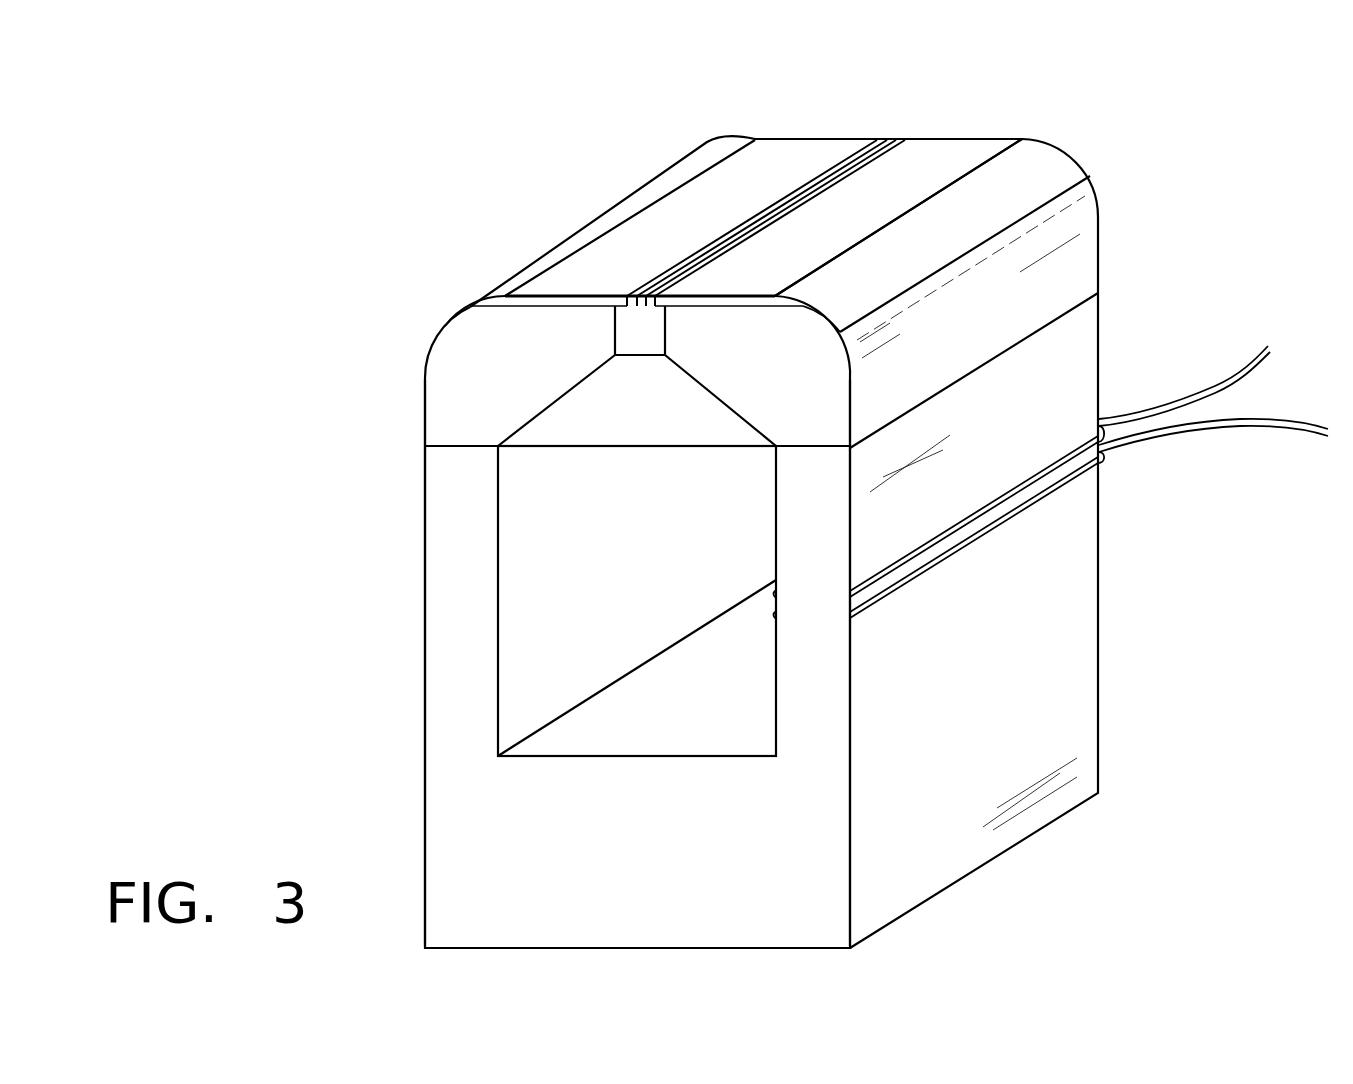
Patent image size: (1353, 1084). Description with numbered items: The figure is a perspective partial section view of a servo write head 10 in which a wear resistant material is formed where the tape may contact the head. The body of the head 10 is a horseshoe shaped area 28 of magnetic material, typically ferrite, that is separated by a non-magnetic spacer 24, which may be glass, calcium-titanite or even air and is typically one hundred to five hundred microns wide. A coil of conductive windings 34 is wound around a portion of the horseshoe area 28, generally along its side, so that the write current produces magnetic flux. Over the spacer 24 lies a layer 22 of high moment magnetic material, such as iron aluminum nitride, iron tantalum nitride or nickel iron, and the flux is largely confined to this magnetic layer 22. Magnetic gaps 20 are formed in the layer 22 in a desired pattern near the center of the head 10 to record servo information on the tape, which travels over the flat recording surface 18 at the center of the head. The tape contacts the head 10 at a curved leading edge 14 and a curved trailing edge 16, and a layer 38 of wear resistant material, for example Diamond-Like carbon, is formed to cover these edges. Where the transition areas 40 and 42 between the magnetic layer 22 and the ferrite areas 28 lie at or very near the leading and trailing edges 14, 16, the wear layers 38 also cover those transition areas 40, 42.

The servo write head 10 is at (1140, 653).
The leading edge 14 is at (460, 313).
The trailing edge 16 is at (818, 317).
The recording surface 18 is at (667, 256).
The magnetic gaps 20 is at (876, 140).
The layer of high moment magnetic material 22 is at (697, 302).
The non-magnetic spacer 24 is at (655, 350).
The horseshoe shaped area 28 is at (487, 486).
The coil of conductive windings 34 is at (920, 553).
The wear layer 38 is at (592, 226).
The transition area 40 is at (487, 308).
The transition area 42 is at (777, 310).